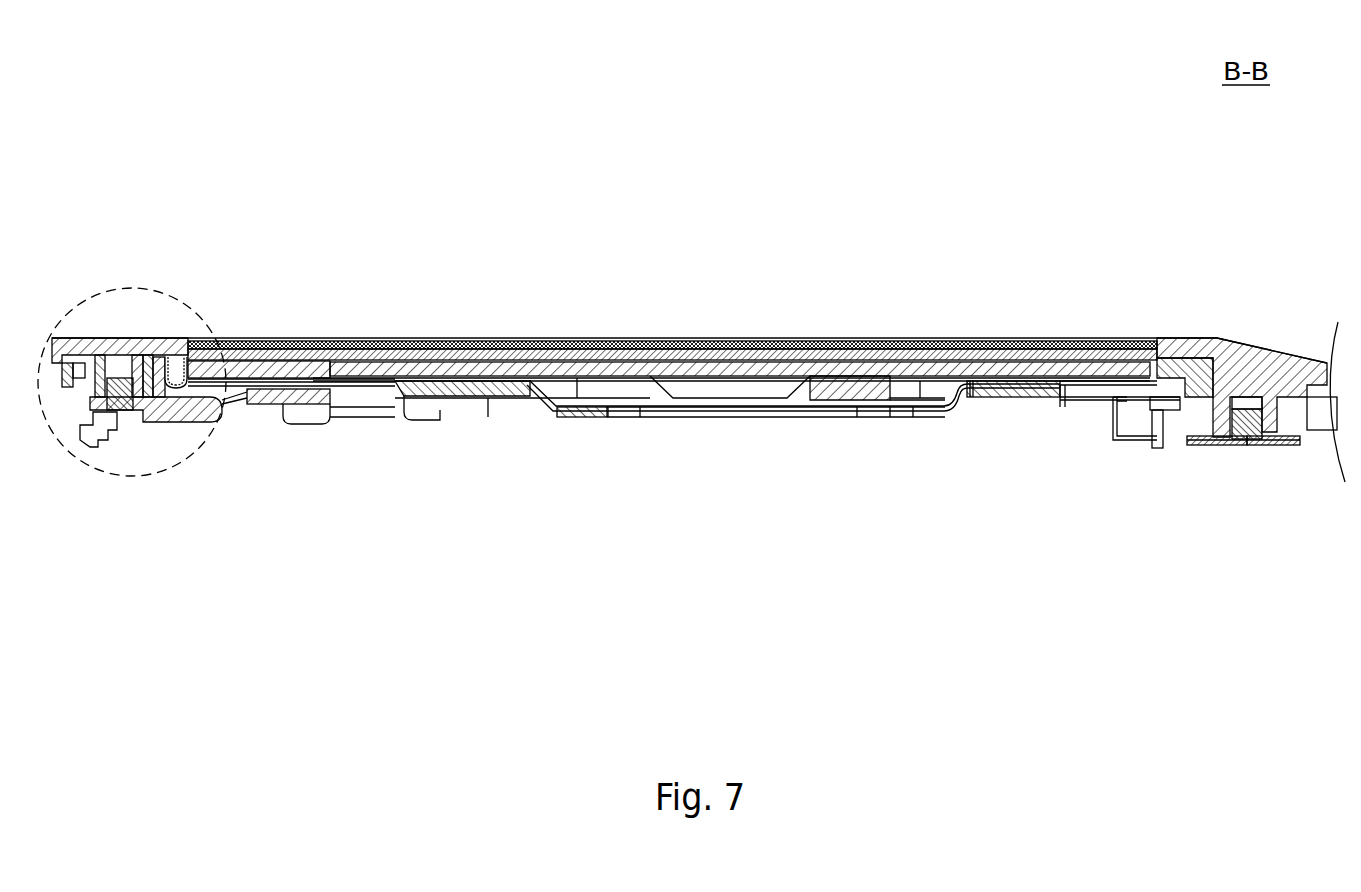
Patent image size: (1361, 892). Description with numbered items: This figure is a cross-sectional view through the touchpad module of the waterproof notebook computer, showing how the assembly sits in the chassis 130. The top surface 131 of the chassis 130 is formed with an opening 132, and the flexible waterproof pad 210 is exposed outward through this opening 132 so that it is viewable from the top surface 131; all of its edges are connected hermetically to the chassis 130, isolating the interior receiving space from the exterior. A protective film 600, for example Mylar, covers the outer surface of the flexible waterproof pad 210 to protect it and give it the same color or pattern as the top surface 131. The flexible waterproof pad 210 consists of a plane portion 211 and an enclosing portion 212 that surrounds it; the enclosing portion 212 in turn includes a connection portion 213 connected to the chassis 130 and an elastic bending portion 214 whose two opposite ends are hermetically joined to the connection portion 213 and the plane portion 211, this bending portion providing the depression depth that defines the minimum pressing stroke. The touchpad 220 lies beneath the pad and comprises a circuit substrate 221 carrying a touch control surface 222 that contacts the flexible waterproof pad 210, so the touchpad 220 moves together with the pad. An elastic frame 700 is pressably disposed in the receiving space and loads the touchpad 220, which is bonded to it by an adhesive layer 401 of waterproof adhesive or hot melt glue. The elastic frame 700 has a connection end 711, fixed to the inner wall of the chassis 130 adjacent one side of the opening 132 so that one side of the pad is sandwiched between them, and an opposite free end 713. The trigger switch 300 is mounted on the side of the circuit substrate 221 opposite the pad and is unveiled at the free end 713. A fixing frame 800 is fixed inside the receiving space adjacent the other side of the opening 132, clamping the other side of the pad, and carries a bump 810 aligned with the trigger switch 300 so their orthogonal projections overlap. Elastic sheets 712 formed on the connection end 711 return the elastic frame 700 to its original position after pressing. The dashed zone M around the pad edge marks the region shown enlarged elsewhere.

The top surface 131 is at (133, 338).
The chassis 130 is at (1247, 349).
The opening 132 is at (1132, 339).
The flexible waterproof pad 210 is at (150, 198).
The plane portion 211 is at (274, 345).
The enclosing portion 212 is at (118, 250).
The connection portion 213 is at (170, 340).
The elastic bending portion 214 is at (186, 356).
The touchpad 220 is at (522, 273).
The circuit substrate 221 is at (488, 357).
The touch control surface 222 is at (435, 357).
The trigger switch 300 is at (313, 364).
The protective film 600 is at (683, 340).
The elastic frame 700 is at (572, 412).
The free end 713 is at (381, 413).
The connection end 711 is at (1207, 447).
The elastic sheets 712 is at (1285, 447).
The fixing frame 800 is at (242, 405).
The bump 810 is at (289, 424).
The adhesive layer 401 is at (1012, 398).
The zone M is at (122, 488).